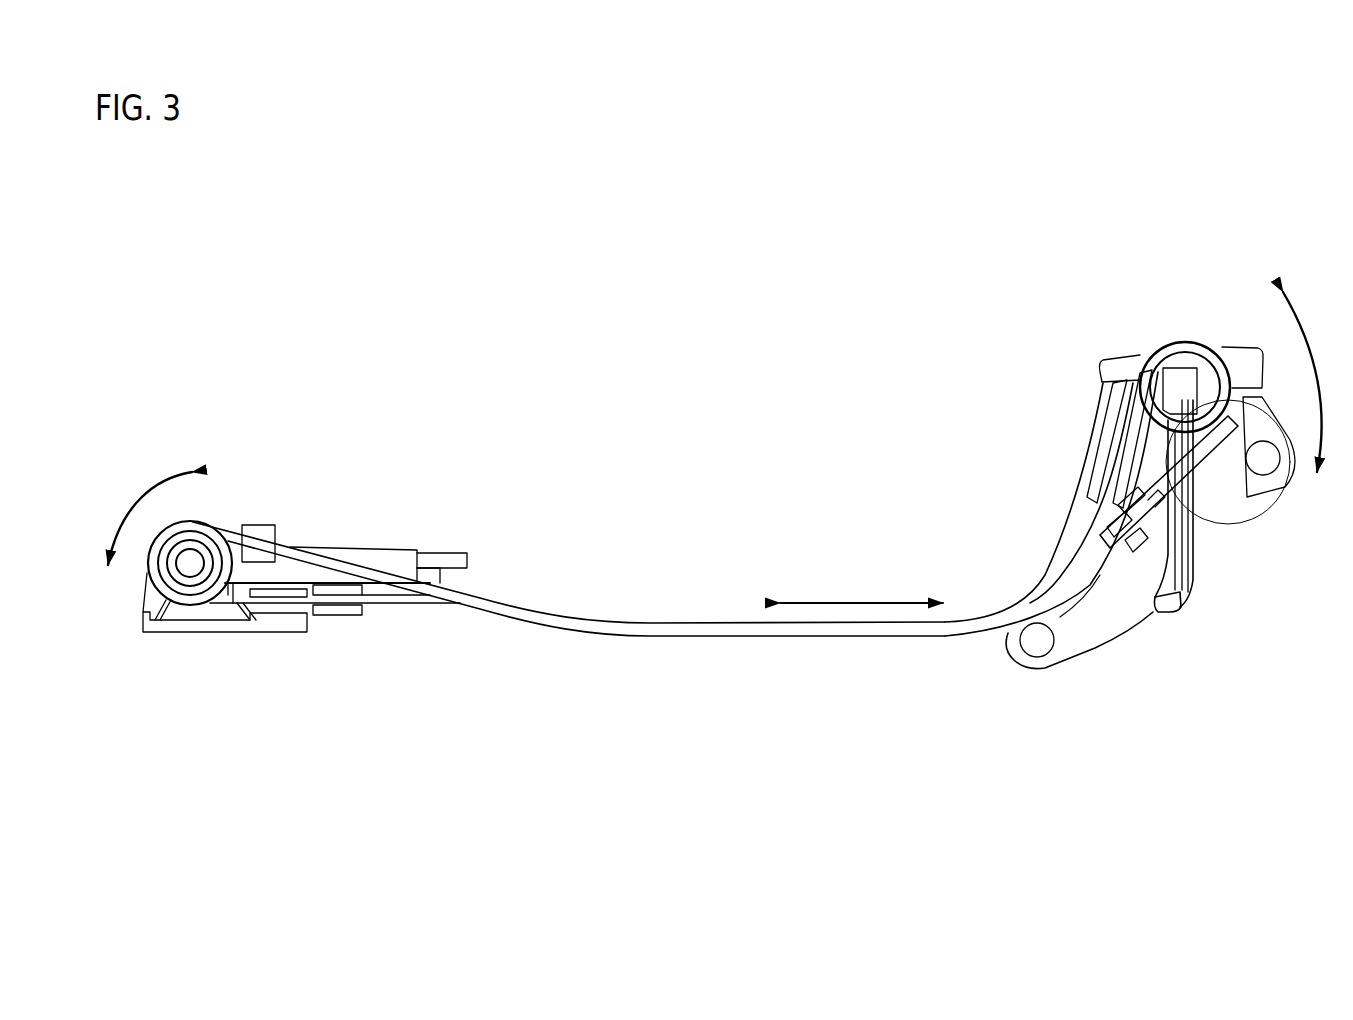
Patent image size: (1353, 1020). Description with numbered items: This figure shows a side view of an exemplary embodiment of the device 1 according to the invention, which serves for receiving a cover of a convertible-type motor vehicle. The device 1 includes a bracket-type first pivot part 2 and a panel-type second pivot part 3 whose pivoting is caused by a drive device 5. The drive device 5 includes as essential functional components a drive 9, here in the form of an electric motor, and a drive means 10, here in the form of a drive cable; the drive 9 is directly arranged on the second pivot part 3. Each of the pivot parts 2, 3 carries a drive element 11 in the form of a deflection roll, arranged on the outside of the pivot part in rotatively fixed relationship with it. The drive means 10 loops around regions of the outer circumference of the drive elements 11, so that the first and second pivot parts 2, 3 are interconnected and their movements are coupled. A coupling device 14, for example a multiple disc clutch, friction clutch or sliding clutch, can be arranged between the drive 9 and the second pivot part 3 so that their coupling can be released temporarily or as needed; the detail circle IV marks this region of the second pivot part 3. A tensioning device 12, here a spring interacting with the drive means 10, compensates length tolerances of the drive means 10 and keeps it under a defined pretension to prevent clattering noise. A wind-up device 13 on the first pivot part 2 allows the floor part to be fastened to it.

The device 1 is at (1028, 276).
The first pivot part 2 is at (371, 552).
The second pivot part 3 is at (1109, 613).
The drive device 5 is at (1080, 697).
The drive 9 is at (1153, 473).
The drive means 10 is at (536, 608).
The drive elements 11 is at (196, 523).
The tensioning device 12 is at (261, 524).
The wind-up device 13 is at (458, 560).
The coupling device 14 is at (1203, 465).
The detail view IV is at (1265, 422).